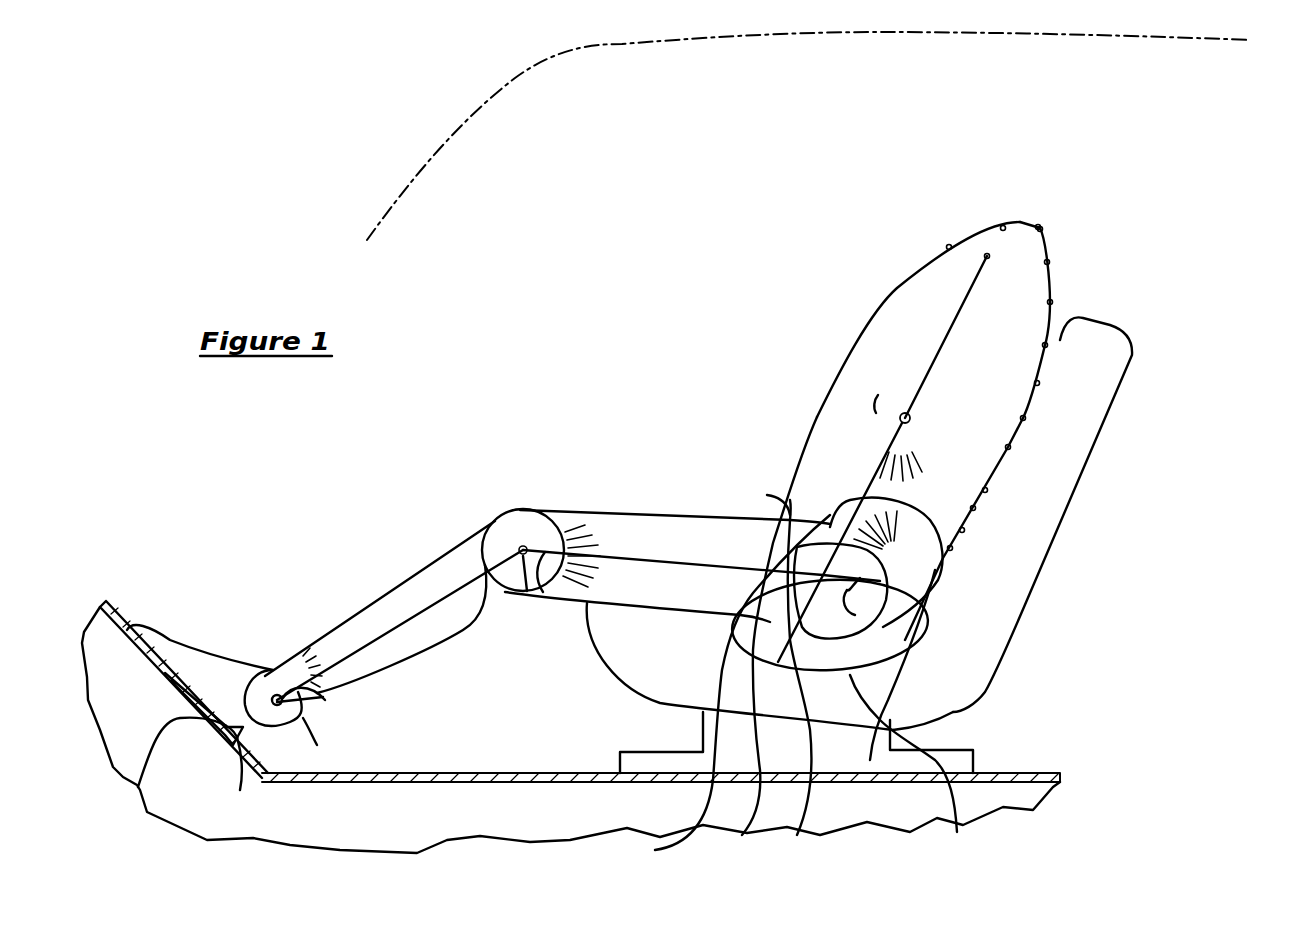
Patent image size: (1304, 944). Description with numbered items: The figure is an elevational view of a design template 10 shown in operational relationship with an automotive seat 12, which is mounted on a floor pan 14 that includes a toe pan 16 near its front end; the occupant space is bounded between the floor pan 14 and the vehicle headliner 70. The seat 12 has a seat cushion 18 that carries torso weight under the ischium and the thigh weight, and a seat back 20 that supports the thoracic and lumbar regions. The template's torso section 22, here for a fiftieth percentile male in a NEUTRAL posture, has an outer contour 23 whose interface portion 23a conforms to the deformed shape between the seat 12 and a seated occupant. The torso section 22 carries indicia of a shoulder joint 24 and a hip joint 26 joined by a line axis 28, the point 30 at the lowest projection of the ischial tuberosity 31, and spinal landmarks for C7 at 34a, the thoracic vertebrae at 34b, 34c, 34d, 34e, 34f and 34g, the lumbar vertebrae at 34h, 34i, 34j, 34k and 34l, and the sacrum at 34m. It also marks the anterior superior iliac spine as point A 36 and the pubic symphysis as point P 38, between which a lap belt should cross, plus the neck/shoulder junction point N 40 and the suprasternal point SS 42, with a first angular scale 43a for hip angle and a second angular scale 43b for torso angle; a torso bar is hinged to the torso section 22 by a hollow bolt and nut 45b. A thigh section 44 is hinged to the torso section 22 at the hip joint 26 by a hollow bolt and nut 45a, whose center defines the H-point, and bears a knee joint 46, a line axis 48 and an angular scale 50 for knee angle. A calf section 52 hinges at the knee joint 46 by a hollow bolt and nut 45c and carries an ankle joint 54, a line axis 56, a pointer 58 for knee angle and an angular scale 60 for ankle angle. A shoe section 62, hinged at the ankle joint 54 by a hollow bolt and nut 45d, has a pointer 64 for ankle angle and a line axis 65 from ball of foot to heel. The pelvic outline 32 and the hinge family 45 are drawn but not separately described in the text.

The design template 10 is at (814, 210).
The seat 12 is at (1033, 596).
The floor pan 14 is at (1000, 773).
The toe pan 16 is at (138, 787).
The seat cushion 18 is at (610, 673).
The seat back 20 is at (1127, 382).
The torso section 22 is at (873, 370).
The outer contour 23 is at (817, 419).
The interface portion 23a is at (957, 832).
The shoulder joint 24 is at (990, 229).
The hip joint 26 is at (797, 835).
The line axis 28 is at (940, 338).
The point ID0 30 is at (953, 712).
The ischial tuberosity 31 is at (1000, 660).
The pelvis 32 is at (840, 618).
The spinal landmark C7 34a is at (1041, 228).
The spinal landmark T2 34b is at (1049, 262).
The spinal landmark T4 34c is at (1052, 302).
The spinal landmark T6 34d is at (1047, 345).
The spinal landmark T8 34e is at (1039, 383).
The spinal landmark T10 34f is at (1025, 418).
The spinal landmark T12 34g is at (1010, 447).
The spinal landmark L1 34h is at (987, 490).
The spinal landmark L2 34i is at (975, 508).
The spinal landmark L3 34j is at (964, 530).
The spinal landmark L4 34k is at (952, 548).
The spinal landmark L5 34l is at (940, 570).
The spinal landmark S1 34m is at (1003, 640).
The point A 36 is at (837, 507).
The point P 38 is at (767, 495).
The point N 40 is at (1003, 226).
The point SS 42 is at (949, 245).
The first angular scale 43a is at (890, 518).
The second angular scale 43b is at (920, 468).
The thigh section 44 is at (680, 598).
The hip joint 45 is at (980, 688).
The hollow bolt and nut 45a is at (655, 850).
The hollow bolt and nut 45b is at (905, 413).
The hollow bolt and nut 45c is at (500, 588).
The hollow bolt and nut 45d is at (305, 725).
The knee joint 46 is at (520, 513).
The line axis 48 is at (620, 557).
The angular scale 50 is at (582, 533).
The calf section 52 is at (407, 590).
The ankle joint 54 is at (270, 669).
The line axis 56 is at (421, 614).
The pointer 58 is at (539, 600).
The angular scale 60 is at (305, 660).
The shoe section 62 is at (185, 662).
The pointer 64 is at (318, 690).
The line axis 65 is at (240, 790).
The vehicle headliner 70 is at (622, 44).